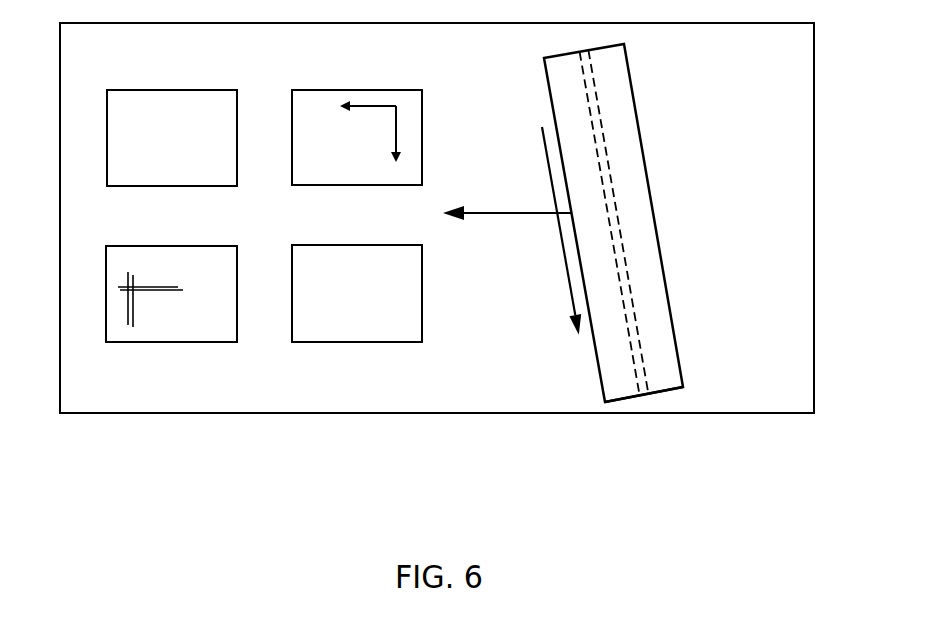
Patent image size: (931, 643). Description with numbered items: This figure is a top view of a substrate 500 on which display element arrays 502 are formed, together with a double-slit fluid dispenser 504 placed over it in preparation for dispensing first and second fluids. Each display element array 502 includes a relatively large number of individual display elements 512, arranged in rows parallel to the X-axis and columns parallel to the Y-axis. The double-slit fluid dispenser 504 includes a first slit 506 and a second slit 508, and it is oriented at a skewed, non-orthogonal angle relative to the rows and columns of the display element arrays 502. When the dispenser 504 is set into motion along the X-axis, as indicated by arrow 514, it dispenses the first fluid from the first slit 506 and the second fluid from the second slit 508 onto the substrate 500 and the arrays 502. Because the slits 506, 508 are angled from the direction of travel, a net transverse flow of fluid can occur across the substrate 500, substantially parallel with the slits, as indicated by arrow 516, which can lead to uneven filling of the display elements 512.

The substrate 500 is at (748, 376).
The display element arrays 502 is at (178, 90).
The double-slit fluid dispenser 504 is at (632, 83).
The first slit 506 is at (638, 388).
The second slit 508 is at (648, 372).
The display elements 512 is at (118, 287).
The arrow 514 is at (525, 213).
The arrow 516 is at (562, 252).